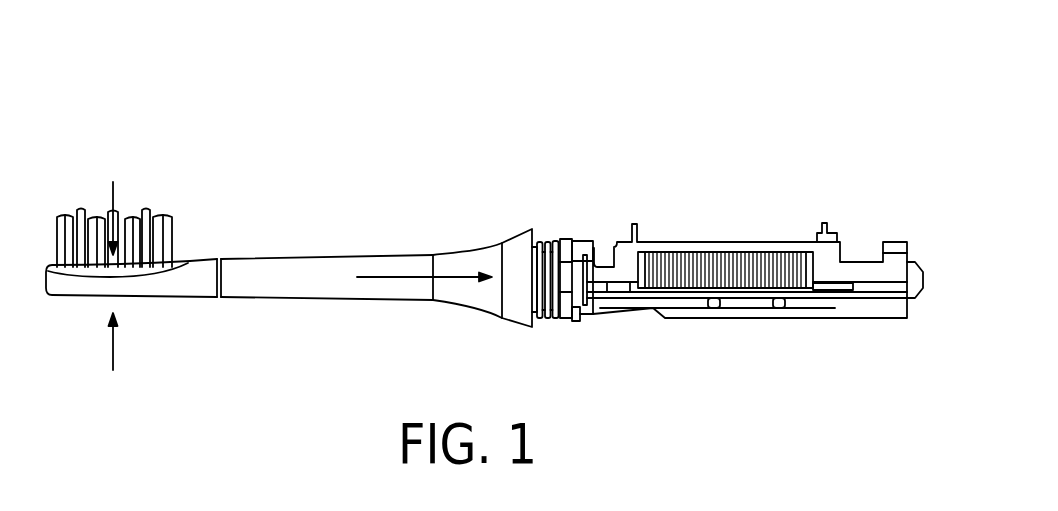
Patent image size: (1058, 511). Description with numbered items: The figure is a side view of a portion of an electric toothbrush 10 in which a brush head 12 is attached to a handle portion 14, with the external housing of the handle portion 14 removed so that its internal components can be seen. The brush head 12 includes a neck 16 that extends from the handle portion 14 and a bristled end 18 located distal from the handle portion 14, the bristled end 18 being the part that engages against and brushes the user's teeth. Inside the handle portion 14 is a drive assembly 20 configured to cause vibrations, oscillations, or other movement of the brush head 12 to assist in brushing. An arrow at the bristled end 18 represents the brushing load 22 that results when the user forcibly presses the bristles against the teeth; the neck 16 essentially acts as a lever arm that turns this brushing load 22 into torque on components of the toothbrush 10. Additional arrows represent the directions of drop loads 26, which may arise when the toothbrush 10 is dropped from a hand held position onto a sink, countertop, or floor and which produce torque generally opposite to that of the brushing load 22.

The electric toothbrush 10 is at (97, 85).
The brush head 12 is at (452, 188).
The handle portion 14 is at (544, 188).
The neck 16 is at (318, 258).
The bristled end 18 is at (47, 184).
The drive assembly 20 is at (796, 215).
The brushing load 22 is at (115, 183).
The drop loads 26 is at (115, 352).